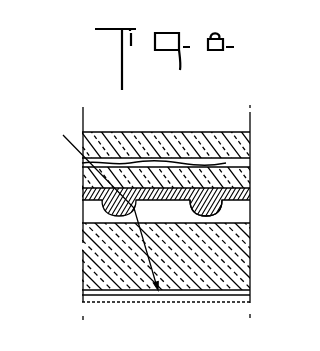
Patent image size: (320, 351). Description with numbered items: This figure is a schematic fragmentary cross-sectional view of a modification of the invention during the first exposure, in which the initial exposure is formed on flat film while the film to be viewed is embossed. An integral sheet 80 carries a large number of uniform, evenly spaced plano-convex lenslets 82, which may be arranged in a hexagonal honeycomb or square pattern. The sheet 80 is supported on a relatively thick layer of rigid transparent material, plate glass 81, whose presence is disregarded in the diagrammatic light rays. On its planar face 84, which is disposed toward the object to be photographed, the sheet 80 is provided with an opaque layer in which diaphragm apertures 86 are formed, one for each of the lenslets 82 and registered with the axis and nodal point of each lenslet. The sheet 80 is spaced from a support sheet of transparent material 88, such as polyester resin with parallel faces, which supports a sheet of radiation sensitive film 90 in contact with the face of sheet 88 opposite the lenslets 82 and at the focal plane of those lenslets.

The integral sheet 80 is at (236, 199).
The plate glass 81 is at (168, 172).
The plano-convex lenslets 82 is at (206, 215).
The planar face 84 is at (184, 187).
The diaphragm apertures 86 is at (226, 163).
The support sheet of transparent material 88 is at (242, 259).
The radiation sensitive film 90 is at (183, 303).